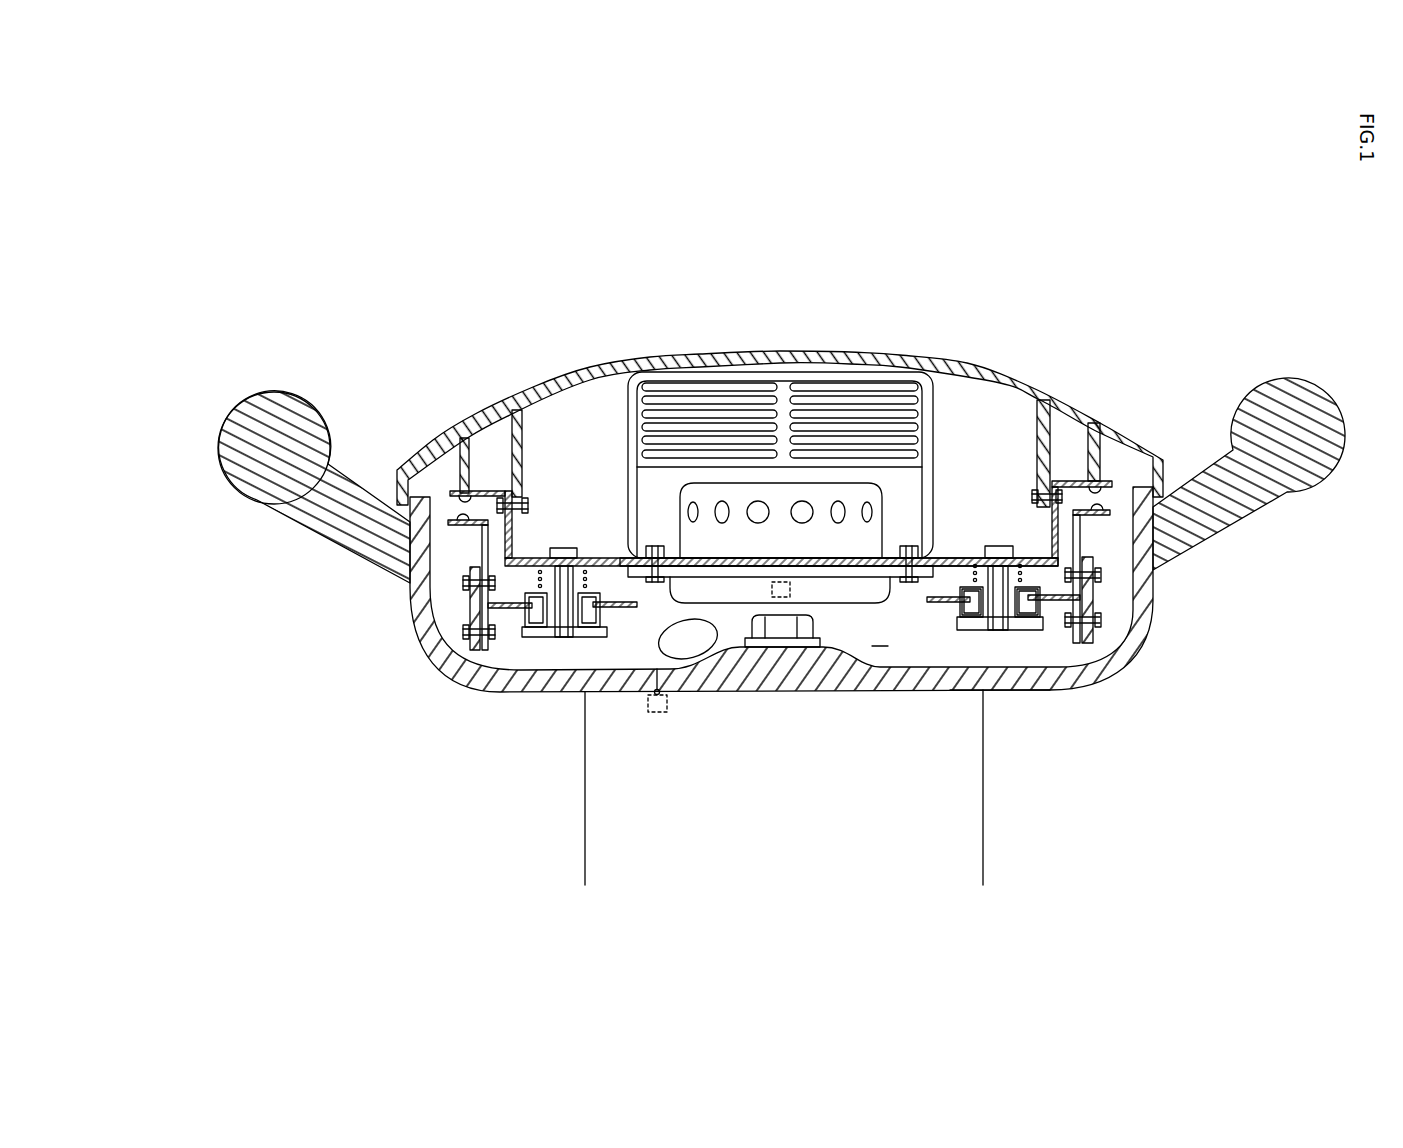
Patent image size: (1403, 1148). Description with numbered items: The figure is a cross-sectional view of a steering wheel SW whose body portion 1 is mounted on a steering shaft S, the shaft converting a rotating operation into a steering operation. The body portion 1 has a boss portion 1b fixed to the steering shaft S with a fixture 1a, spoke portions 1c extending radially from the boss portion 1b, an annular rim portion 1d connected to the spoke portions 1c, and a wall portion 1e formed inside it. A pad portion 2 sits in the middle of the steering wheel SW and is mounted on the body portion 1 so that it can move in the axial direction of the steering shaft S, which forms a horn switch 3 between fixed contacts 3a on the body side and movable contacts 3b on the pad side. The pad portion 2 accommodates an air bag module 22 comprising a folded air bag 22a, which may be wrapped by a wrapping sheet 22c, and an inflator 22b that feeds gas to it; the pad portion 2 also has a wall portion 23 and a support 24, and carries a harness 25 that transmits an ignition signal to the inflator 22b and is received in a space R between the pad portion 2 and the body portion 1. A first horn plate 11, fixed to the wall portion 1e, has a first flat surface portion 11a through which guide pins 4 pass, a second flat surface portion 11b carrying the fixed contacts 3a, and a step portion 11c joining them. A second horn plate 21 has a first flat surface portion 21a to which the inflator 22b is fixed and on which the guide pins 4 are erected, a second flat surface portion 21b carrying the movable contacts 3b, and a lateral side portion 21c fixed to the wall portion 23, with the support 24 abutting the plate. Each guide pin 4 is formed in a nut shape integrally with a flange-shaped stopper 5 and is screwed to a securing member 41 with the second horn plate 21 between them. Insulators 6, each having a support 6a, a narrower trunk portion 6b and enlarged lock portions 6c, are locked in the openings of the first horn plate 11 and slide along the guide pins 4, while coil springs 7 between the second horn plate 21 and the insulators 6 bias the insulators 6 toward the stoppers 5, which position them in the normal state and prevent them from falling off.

The body portion 1 is at (428, 722).
The fixture 1a is at (806, 620).
The boss portion 1b is at (1010, 688).
The spoke portions 1c is at (322, 536).
The annular rim portion 1d is at (271, 393).
The wall portion 1e is at (1094, 603).
The pad portion 2 is at (1013, 372).
The horn switch 3 is at (1105, 486).
The fixed contacts 3a is at (1104, 504).
The movable contacts 3b is at (1087, 497).
The guide pins 4 is at (565, 638).
The stoppers 5 is at (532, 628).
The insulators 6 is at (608, 620).
The support 6a is at (1040, 601).
The trunk portion 6b is at (978, 590).
The lock portions 6c is at (1027, 588).
The coil springs 7 is at (538, 580).
The first horn plate 11 is at (927, 600).
The first flat surface portion 11a is at (506, 612).
The second flat surface portion 11b is at (462, 526).
The step portion 11c is at (1080, 554).
The second horn plate 21 is at (620, 558).
The first flat surface portion 21a is at (935, 557).
The second flat surface portion 21b is at (487, 490).
The lateral side portion 21c is at (513, 527).
The air bag module 22 is at (618, 400).
The air bag 22a is at (712, 388).
The inflator 22b is at (781, 487).
The wrapping sheet 22c is at (935, 418).
The wall portion 23 is at (522, 447).
The support 24 is at (455, 488).
The harness 25 is at (716, 636).
The securing members 41 is at (999, 546).
The steering wheel SW is at (455, 338).
The steering shaft S is at (590, 826).
The space R is at (880, 635).